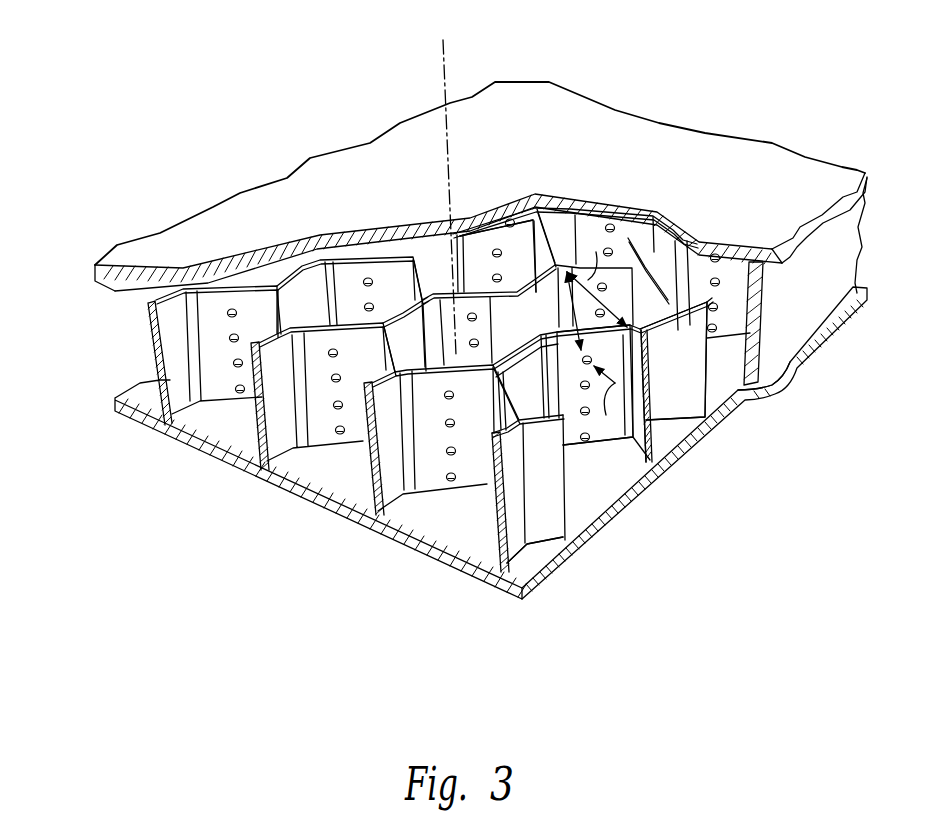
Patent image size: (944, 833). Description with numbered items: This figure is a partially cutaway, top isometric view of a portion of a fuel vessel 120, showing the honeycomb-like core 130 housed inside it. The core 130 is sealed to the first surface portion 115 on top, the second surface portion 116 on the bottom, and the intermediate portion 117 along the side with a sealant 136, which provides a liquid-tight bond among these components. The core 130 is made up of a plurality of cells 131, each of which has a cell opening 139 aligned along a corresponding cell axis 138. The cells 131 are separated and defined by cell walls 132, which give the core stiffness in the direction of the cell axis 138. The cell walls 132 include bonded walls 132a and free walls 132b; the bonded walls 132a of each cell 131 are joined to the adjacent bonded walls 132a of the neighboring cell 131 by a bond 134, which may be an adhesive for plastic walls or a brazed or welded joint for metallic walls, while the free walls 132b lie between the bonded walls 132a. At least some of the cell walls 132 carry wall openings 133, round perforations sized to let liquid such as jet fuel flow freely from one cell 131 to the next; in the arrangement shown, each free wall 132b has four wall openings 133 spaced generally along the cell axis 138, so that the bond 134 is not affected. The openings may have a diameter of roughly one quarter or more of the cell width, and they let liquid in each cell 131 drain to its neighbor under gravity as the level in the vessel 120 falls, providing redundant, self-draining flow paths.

The first surface portion 115 is at (573, 113).
The second surface portion 116 is at (217, 462).
The intermediate portion 117 is at (793, 373).
The vessel 120 is at (689, 74).
The core 130 is at (113, 340).
The cell 131 is at (618, 463).
The cell wall 132 is at (670, 445).
The bonded wall 132a is at (660, 390).
The free wall 132b is at (573, 435).
The wall opening 133 is at (631, 240).
The bond 134 is at (682, 242).
The sealant 136 is at (191, 279).
The cell axis 138 is at (443, 70).
The cell opening 139 is at (485, 252).